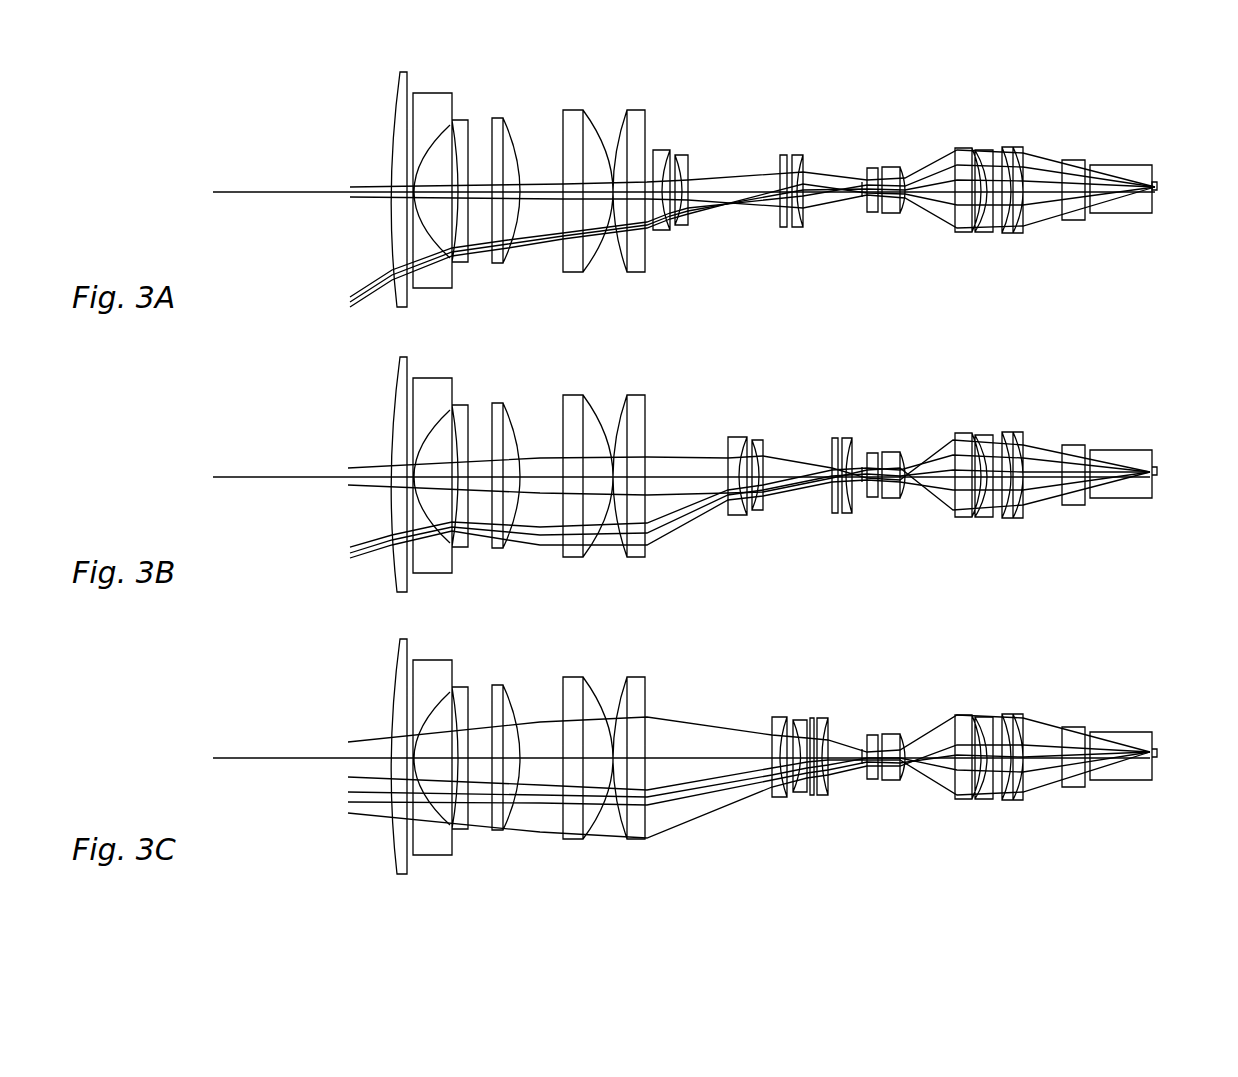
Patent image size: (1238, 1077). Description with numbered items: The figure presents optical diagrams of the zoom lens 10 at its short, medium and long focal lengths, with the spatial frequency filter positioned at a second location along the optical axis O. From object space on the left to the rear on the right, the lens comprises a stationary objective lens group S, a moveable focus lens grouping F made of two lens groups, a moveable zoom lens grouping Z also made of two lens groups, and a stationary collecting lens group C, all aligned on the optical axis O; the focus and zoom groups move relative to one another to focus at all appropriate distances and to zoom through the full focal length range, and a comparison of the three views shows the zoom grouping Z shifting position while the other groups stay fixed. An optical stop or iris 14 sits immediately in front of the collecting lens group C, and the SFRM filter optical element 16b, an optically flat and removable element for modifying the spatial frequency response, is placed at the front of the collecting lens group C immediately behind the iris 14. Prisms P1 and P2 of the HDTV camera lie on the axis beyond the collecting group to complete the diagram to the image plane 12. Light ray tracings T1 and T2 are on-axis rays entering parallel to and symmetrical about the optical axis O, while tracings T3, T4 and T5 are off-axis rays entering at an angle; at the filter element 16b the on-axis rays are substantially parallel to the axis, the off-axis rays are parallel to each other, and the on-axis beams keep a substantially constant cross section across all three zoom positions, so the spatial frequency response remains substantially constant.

In FIG. 3A, the zoom lens 10 is at (700, 174).
In FIG. 3B, the zoom lens 10 is at (774, 483).
In FIG. 3C, the zoom lens 10 is at (774, 769).
In FIG. 3A, the image plane 12 is at (1157, 191).
In FIG. 3A, the optical stop or iris 14 is at (862, 187).
In FIG. 3A, the SFRM filter optical element 16b is at (870, 212).
In FIG. 3B, the SFRM filter optical element 16b is at (868, 500).
In FIG. 3C, the SFRM filter optical element 16b is at (865, 781).
In FIG. 3A, the optical axis O is at (261, 190).
In FIG. 3B, the optical axis O is at (261, 476).
In FIG. 3C, the optical axis O is at (259, 756).
In FIG. 3A, the on-axis light ray tracing T1 is at (357, 186).
In FIG. 3B, the on-axis light ray tracing T1 is at (360, 467).
In FIG. 3C, the on-axis light ray tracing T1 is at (355, 740).
In FIG. 3A, the on-axis light ray tracing T2 is at (357, 200).
In FIG. 3B, the on-axis light ray tracing T2 is at (357, 488).
In FIG. 3C, the on-axis light ray tracing T2 is at (350, 775).
In FIG. 3A, the off-axis light ray tracing T3 is at (355, 292).
In FIG. 3B, the off-axis light ray tracing T3 is at (355, 547).
In FIG. 3C, the off-axis light ray tracing T3 is at (352, 793).
In FIG. 3A, the off-axis light ray tracing T4 is at (352, 300).
In FIG. 3B, the off-axis light ray tracing T4 is at (350, 557).
In FIG. 3C, the off-axis light ray tracing T4 is at (348, 803).
In FIG. 3A, the off-axis light ray tracing T5 is at (362, 305).
In FIG. 3B, the off-axis light ray tracing T5 is at (362, 560).
In FIG. 3C, the off-axis light ray tracing T5 is at (362, 813).
In FIG. 3A, the prism P1 is at (1080, 158).
In FIG. 3A, the prism P2 is at (1140, 163).
In FIG. 3A, the stationary objective lens group S is at (477, 70).
In FIG. 3A, the moveable focus lens grouping F is at (652, 70).
In FIG. 3A, the moveable zoom lens grouping Z is at (818, 70).
In FIG. 3B, the moveable zoom lens grouping Z is at (852, 408).
In FIG. 3C, the moveable zoom lens grouping Z is at (830, 713).
In FIG. 3A, the stationary collecting lens group C is at (1025, 70).